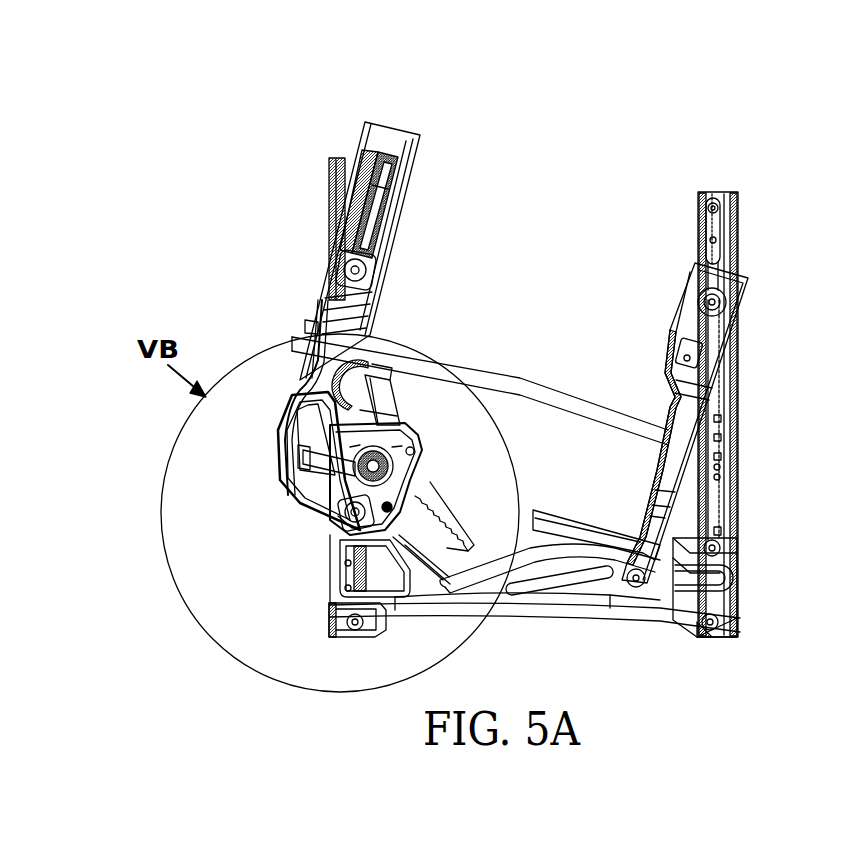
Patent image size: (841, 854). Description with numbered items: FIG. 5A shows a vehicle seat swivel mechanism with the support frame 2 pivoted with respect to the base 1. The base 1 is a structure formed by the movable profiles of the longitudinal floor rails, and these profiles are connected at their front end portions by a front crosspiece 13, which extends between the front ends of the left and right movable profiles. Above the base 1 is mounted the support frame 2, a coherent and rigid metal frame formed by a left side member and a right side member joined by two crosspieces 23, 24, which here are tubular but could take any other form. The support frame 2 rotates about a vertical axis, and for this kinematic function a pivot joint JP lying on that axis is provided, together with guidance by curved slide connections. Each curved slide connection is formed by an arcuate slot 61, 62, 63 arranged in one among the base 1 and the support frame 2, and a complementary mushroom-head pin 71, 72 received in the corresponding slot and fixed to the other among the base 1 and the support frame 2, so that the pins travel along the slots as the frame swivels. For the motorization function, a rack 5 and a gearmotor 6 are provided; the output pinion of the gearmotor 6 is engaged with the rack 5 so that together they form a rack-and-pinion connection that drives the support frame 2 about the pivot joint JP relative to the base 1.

The base 1 is at (738, 499).
The support frame 2 is at (728, 455).
The rack 5 is at (430, 516).
The gearmotor 6 is at (397, 397).
The front crosspiece 13 is at (586, 619).
The crosspiece 23 is at (575, 532).
The crosspiece 24 is at (556, 395).
The arcuate slot 61 is at (382, 208).
The arcuate slot 62 is at (297, 425).
The arcuate slot 63 is at (690, 598).
The mushroom-head pin 71 is at (345, 268).
The mushroom-head pin 72 is at (340, 520).
The pivot joint JP is at (700, 300).